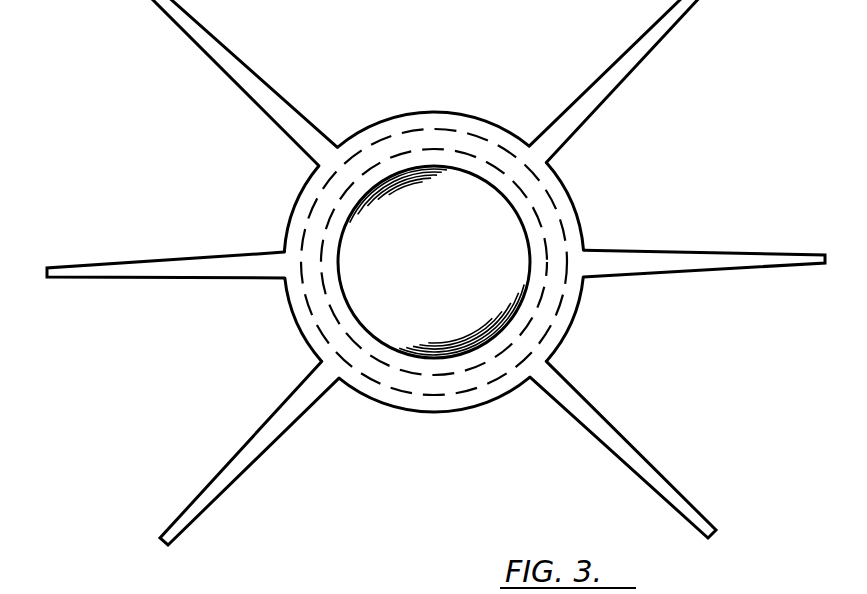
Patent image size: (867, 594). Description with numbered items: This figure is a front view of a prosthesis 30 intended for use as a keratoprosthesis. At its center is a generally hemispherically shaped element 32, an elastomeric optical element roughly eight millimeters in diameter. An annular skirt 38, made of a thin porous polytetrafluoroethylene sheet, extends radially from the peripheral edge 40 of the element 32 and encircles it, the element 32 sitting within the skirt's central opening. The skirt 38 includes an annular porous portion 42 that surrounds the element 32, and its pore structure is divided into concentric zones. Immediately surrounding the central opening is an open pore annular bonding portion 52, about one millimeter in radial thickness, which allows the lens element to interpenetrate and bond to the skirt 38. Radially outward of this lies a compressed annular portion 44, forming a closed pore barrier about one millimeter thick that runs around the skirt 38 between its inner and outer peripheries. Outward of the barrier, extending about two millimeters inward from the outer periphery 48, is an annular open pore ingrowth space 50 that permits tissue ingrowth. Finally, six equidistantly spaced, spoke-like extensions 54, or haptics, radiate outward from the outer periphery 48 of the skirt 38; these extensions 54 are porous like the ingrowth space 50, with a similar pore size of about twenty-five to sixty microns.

The prosthesis 30 is at (636, 136).
The hemispherically shaped element 32 is at (442, 277).
The annular skirt 38 is at (562, 324).
The peripheral edge 40 is at (418, 360).
The annular porous portion 42 is at (554, 354).
The annular portion 44 is at (556, 310).
The outer periphery 48 is at (300, 326).
The annular open pore ingrowth space 50 is at (577, 207).
The open pore annular bonding portion 52 is at (432, 155).
The spoke-like extensions 54 is at (626, 60).